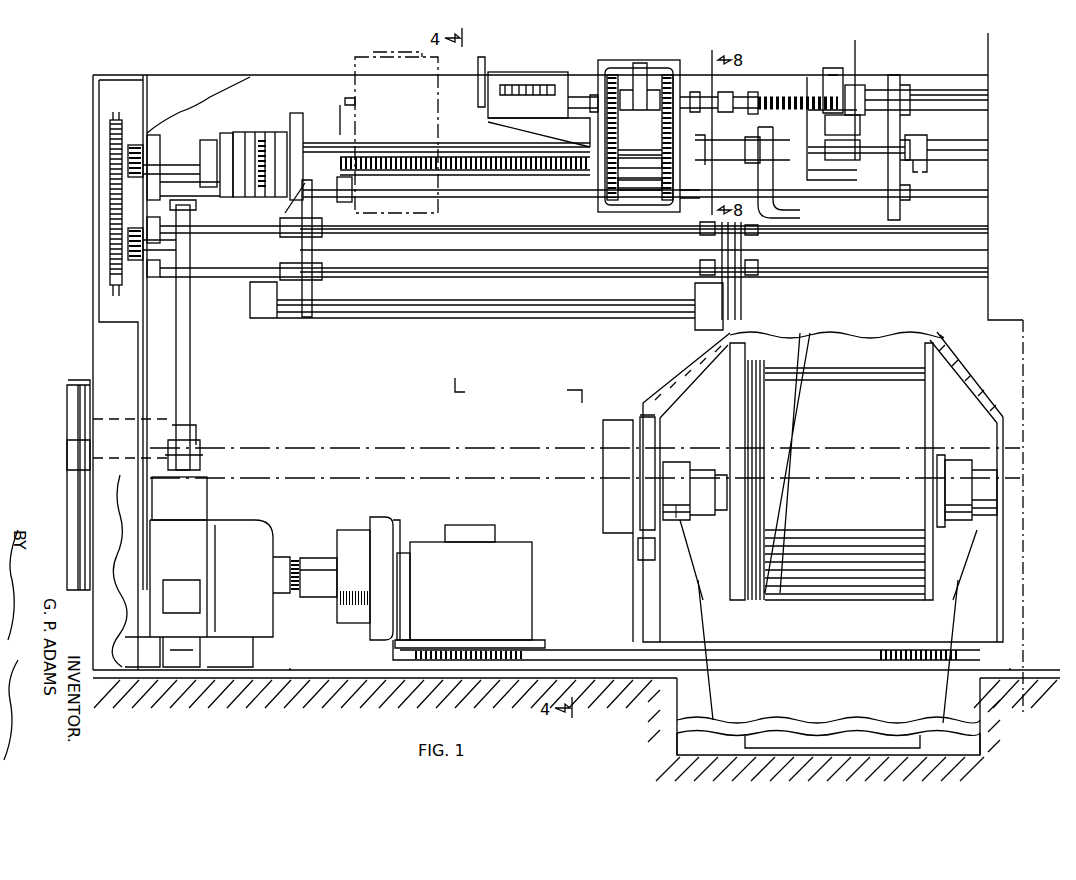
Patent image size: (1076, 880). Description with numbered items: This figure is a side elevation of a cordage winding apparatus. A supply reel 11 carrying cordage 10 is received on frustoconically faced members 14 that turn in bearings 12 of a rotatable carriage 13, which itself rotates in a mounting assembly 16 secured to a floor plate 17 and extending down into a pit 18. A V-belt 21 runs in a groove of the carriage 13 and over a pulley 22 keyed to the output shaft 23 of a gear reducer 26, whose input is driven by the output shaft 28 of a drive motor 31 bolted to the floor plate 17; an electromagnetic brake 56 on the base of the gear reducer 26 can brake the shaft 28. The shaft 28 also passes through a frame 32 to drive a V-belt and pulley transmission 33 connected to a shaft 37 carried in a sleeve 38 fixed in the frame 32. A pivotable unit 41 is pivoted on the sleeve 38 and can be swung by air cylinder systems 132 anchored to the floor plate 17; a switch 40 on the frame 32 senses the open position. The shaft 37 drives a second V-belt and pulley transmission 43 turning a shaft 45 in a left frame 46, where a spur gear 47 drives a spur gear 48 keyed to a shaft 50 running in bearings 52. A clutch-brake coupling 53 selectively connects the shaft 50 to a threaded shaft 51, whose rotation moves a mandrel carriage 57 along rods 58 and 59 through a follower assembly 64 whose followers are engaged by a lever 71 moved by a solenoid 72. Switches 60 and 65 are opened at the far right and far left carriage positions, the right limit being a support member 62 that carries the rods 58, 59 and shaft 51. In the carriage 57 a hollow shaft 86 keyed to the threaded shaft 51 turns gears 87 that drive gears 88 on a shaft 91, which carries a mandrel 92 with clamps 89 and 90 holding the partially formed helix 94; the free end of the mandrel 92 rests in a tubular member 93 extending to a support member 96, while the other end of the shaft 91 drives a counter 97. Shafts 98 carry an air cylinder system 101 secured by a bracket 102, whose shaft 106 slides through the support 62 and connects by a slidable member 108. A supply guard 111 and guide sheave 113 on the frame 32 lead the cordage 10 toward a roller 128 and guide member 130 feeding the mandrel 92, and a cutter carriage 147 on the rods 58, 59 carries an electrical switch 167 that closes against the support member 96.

The cordage 10 is at (810, 353).
The supply reel 11 is at (925, 567).
The bearings 12 is at (700, 478).
The rotatable carriage 13 is at (603, 600).
The frustoconically faced members 14 is at (730, 470).
The mounting assembly 16 is at (930, 701).
The floor plate 17 is at (290, 665).
The pit 18 is at (677, 698).
The V-belt 21 is at (591, 650).
The pulley 22 is at (400, 665).
The output shaft 23 is at (472, 645).
The gear reducer 26 is at (520, 560).
The output shaft 28 is at (291, 558).
The drive motor 31 is at (233, 530).
The frame 32 is at (55, 528).
The V-belt and pulley transmission 33 is at (34, 500).
The shaft 37 is at (80, 445).
The sleeve 38 is at (159, 433).
The switch 40 is at (655, 550).
The pivotable unit 41 is at (52, 173).
The V-belt and pulley transmission 43 is at (232, 346).
The shaft 45 is at (160, 290).
The left frame 46 is at (143, 75).
The spur gear 47 is at (118, 285).
The spur gear 48 is at (117, 120).
The shaft 50 is at (188, 160).
The threaded shaft 51 is at (404, 158).
The bearings 52 is at (138, 148).
The clutch-brake coupling 53 is at (262, 110).
The electromagnetic brake 56 is at (352, 510).
The mandrel carriage 57 is at (392, 22).
The rod 58 is at (462, 144).
The rod 59 is at (482, 192).
The switch 60 is at (736, 92).
The support member 62 is at (770, 211).
The follower assembly 64 is at (690, 206).
The switch 65 is at (343, 197).
The lever 71 is at (703, 94).
The solenoid 72 is at (701, 150).
The hollow shaft 86 is at (621, 150).
The gears 87 is at (662, 191).
The gears 88 is at (662, 127).
The clamp 89 is at (756, 93).
The clamp 90 is at (845, 90).
The shaft 91 is at (580, 98).
The mandrel 92 is at (787, 116).
The tubular member 93 is at (918, 99).
The helix 94 is at (818, 140).
The support member 96 is at (890, 75).
The counter 97 is at (535, 54).
The shafts 98 is at (202, 280).
The air cylinder system 101 is at (395, 342).
The bracket 102 is at (200, 300).
The shaft 106 is at (495, 248).
The slidable member 108 is at (740, 265).
The supply guard 111 is at (928, 314).
The guide sheave 113 is at (850, 145).
The roller 128 is at (845, 127).
The guide member 130 is at (822, 70).
The air cylinder system 132 is at (236, 493).
The carriage 147 is at (985, 250).
The electrical switch 167 is at (925, 135).